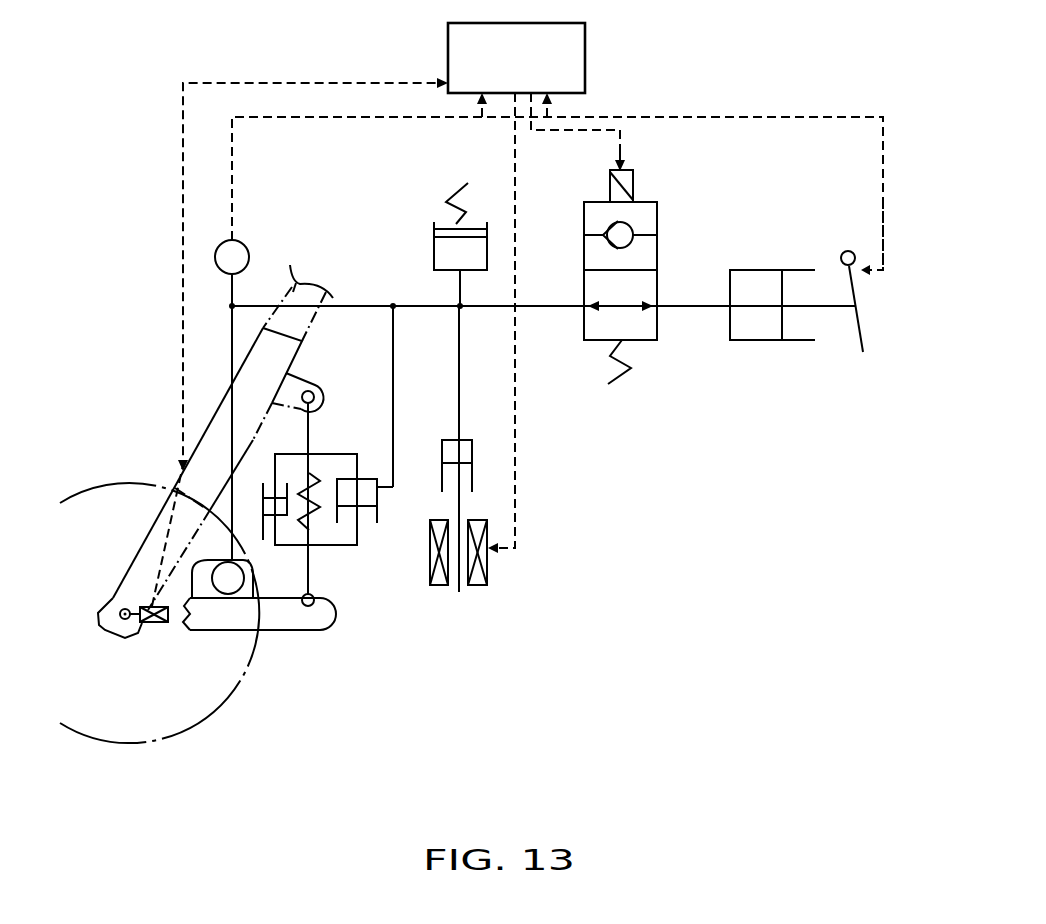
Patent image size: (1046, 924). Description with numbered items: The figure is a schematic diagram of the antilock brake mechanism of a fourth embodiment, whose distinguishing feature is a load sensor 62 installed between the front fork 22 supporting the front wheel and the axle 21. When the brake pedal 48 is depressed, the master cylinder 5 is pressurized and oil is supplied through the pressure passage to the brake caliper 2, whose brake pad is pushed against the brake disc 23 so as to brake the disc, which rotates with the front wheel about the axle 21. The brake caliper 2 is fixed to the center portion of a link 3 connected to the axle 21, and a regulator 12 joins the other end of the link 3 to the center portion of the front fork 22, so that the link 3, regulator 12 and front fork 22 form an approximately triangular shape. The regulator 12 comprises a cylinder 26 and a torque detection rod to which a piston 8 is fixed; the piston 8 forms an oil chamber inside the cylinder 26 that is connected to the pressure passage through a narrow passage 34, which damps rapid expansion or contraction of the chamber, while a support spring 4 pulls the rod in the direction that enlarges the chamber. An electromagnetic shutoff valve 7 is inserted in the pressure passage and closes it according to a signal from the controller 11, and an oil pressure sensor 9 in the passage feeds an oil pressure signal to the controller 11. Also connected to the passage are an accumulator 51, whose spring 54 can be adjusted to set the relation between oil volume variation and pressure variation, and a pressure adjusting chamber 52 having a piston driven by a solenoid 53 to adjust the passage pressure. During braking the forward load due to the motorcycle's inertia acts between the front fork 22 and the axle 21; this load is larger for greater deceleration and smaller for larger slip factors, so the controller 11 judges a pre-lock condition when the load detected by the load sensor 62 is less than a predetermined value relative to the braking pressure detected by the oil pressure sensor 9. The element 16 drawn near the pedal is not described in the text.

The controller 11 is at (585, 62).
The oil pressure sensor 9 is at (246, 247).
The accumulator 51 is at (434, 252).
The spring 54 is at (447, 213).
The pressure adjusting chamber 52 is at (468, 440).
The solenoid 53 is at (488, 568).
The electromagnetic shutoff valve 7 is at (640, 342).
The master cylinder 5 is at (755, 340).
The brake pedal 48 is at (860, 322).
The lever sensor 16 is at (868, 273).
The front fork 22 is at (181, 467).
The regulator 12 is at (357, 556).
The support spring 4 is at (315, 508).
The narrow passage 34 is at (268, 506).
The cylinder 26 is at (380, 498).
The piston 8 is at (362, 510).
The brake caliper 2 is at (246, 578).
The link 3 is at (335, 626).
The load sensor 62 is at (155, 622).
The axle 21 is at (120, 598).
The brake disc 23 is at (245, 675).